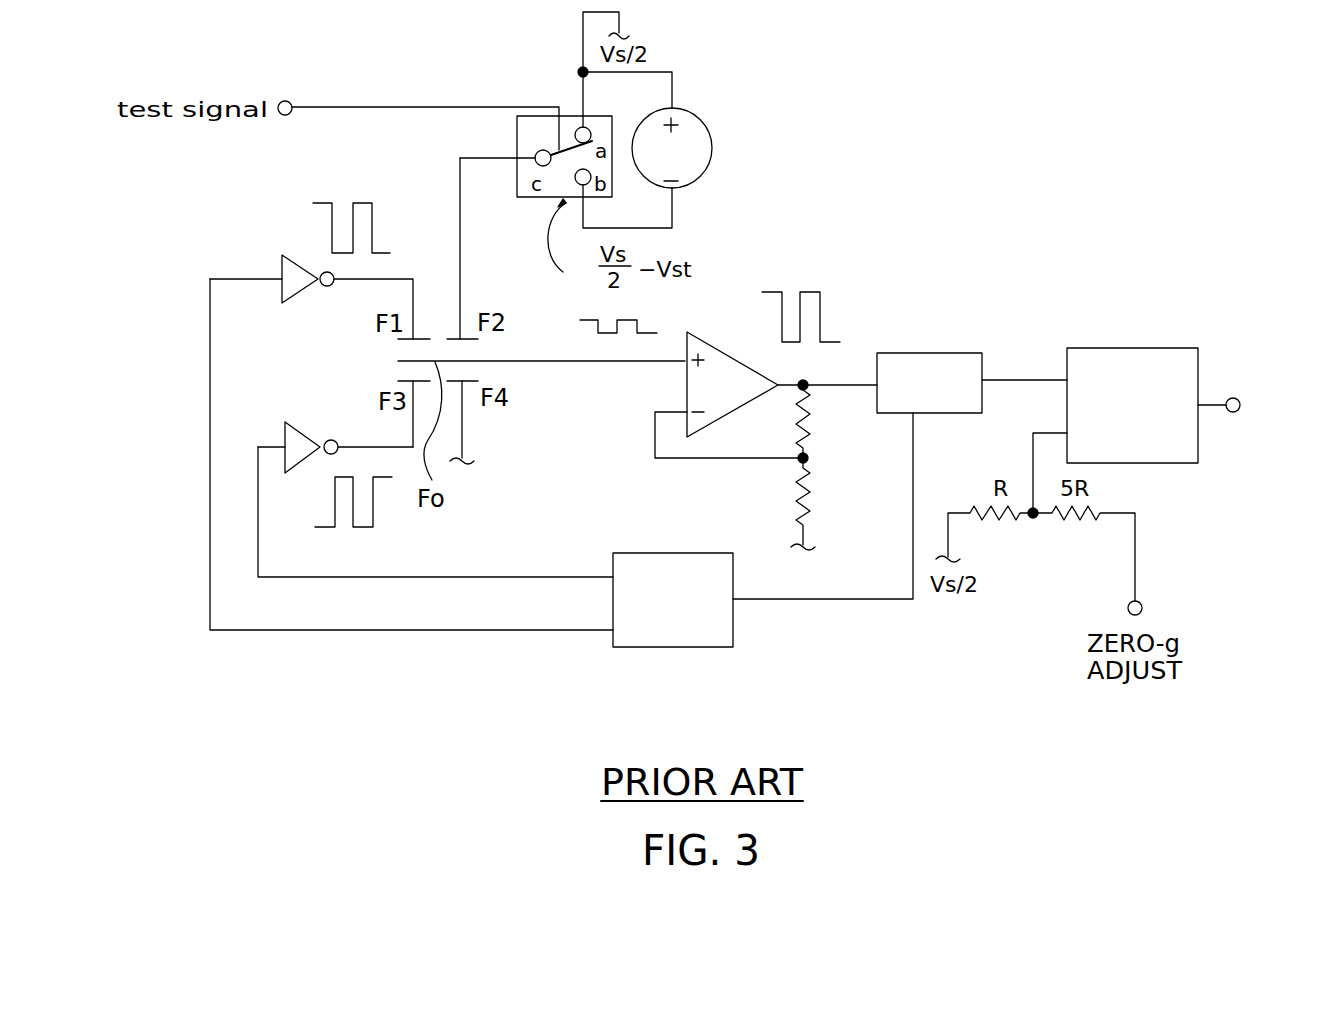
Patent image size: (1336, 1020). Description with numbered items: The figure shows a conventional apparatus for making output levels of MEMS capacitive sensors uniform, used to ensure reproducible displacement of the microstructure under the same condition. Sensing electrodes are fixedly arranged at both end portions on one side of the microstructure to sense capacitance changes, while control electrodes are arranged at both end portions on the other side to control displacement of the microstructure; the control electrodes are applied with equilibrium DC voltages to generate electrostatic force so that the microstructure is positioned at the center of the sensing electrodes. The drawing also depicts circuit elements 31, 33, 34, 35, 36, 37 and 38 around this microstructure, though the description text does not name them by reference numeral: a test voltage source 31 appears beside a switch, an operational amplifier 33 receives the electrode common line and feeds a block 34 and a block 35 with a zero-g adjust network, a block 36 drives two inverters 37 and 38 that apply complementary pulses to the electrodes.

The test voltage source Vst 31 is at (712, 134).
The operational amplifier 33 is at (712, 350).
The demodulator block 34 is at (930, 353).
The output amplifier block 35 is at (1165, 348).
The clock generator block 36 is at (649, 647).
The inverter 37 is at (282, 268).
The inverter 38 is at (298, 440).